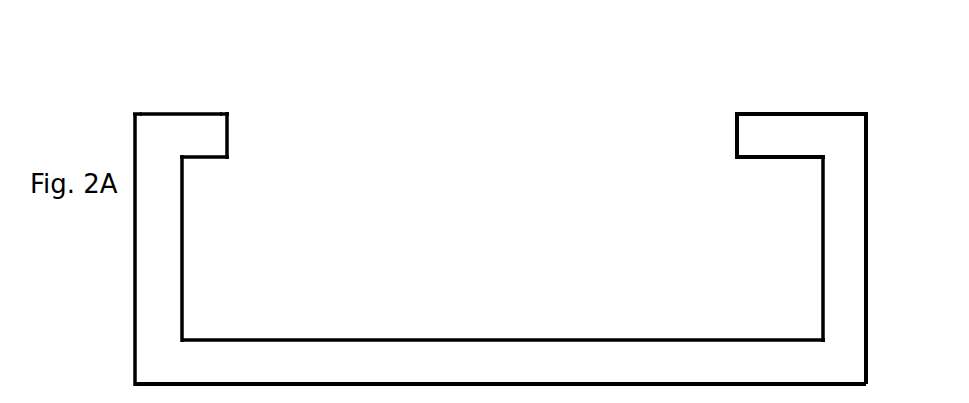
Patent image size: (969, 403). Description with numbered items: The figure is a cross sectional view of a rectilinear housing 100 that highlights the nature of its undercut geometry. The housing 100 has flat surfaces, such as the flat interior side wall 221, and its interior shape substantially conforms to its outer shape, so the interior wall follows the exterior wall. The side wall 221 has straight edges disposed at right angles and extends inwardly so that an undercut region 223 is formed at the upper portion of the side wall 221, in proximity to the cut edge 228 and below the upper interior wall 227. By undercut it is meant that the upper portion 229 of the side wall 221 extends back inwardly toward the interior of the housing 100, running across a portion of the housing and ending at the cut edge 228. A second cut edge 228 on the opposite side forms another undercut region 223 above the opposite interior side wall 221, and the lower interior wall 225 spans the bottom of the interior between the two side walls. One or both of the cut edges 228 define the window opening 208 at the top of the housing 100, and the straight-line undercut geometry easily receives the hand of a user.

The housing 100 is at (168, 402).
The window opening 208 is at (487, 109).
The side wall 221 is at (132, 225).
The undercut region 223 is at (773, 219).
The lower interior wall 225 is at (590, 338).
The upper interior wall 227 is at (749, 161).
The cut edge 228 is at (232, 113).
The upper portion of the side wall 229 is at (794, 111).